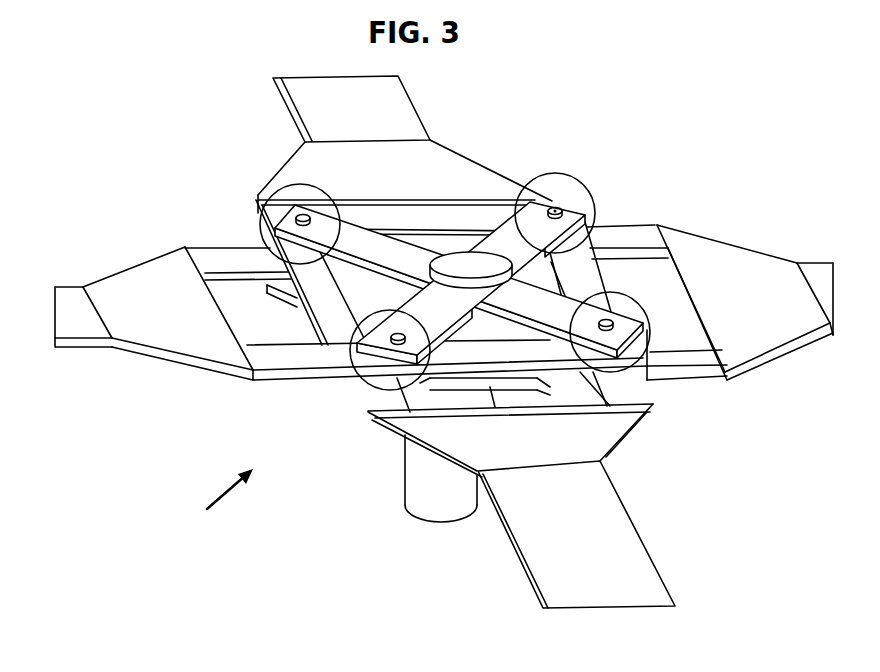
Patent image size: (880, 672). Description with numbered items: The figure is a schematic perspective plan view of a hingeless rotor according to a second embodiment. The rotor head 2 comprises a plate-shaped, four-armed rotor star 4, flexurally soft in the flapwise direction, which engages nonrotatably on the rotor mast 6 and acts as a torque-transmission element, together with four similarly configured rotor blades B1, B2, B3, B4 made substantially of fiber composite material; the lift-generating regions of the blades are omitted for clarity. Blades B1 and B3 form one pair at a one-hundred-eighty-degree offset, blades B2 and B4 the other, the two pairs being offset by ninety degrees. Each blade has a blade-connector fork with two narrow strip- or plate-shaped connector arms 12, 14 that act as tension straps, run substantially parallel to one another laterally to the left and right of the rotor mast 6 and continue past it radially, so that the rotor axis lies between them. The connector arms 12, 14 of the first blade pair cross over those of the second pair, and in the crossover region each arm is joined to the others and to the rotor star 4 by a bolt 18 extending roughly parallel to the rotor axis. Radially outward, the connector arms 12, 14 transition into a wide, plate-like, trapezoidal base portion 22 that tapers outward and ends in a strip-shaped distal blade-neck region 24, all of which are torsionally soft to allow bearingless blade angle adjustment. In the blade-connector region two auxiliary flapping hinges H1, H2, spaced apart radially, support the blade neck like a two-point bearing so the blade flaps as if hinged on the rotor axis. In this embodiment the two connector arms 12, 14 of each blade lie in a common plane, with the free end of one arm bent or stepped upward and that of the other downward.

The rotor head 2 is at (222, 499).
The rotor star 4 is at (556, 204).
The rotor mast 6 is at (413, 488).
The connector arm 12 is at (325, 297).
The connector arm 14 is at (228, 257).
The bolt 18 is at (299, 212).
The base portion 22 is at (168, 270).
The blade-neck region 24 is at (75, 302).
The auxiliary flapping hinge H1 is at (573, 183).
The auxiliary flapping hinge H2 is at (257, 193).
The rotor blade B1 is at (822, 336).
The rotor blade B2 is at (663, 609).
The rotor blade B3 is at (72, 352).
The rotor blade B4 is at (275, 80).